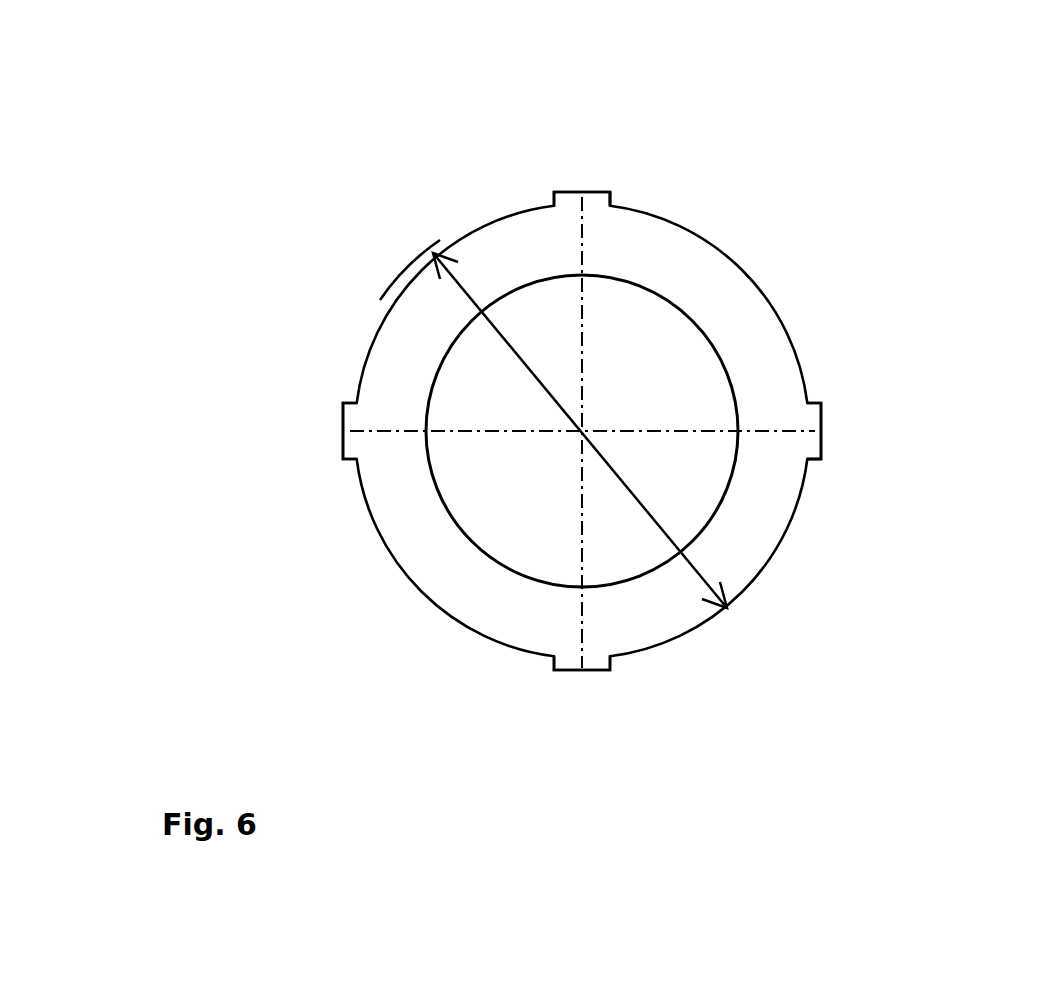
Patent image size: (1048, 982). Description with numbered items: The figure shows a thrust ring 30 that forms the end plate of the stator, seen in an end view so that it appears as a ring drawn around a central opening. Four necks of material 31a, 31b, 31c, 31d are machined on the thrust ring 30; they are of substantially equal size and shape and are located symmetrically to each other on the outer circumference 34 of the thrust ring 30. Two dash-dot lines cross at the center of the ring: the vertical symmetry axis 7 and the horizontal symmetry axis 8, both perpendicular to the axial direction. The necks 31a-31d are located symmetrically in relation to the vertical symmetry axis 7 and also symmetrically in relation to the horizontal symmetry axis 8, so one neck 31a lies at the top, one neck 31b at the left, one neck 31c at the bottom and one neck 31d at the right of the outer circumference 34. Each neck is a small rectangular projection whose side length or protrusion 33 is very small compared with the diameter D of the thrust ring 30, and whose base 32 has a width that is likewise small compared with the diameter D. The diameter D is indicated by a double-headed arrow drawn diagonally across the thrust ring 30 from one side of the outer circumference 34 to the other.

The vertical symmetry axis 7 is at (582, 330).
The horizontal symmetry axis 8 is at (465, 422).
The thrust ring 30 is at (726, 296).
The neck of material 31a is at (567, 202).
The neck of material 31b is at (345, 404).
The neck of material 31c is at (570, 658).
The neck of material 31d is at (815, 424).
The base of the neck 32 is at (822, 455).
The protrusion of the neck 33 is at (607, 195).
The outer circumference 34 is at (412, 280).
The diameter of the thrust ring D is at (648, 512).